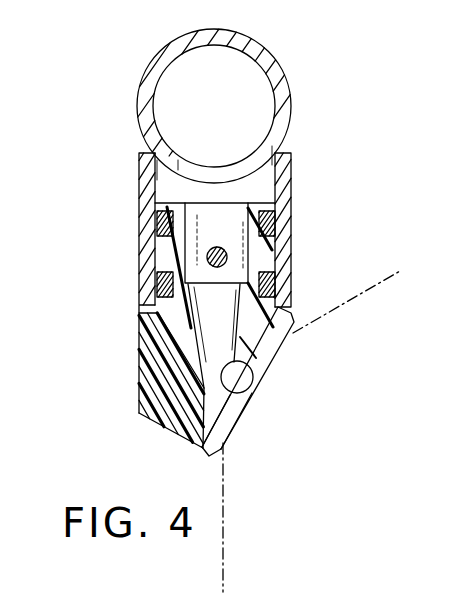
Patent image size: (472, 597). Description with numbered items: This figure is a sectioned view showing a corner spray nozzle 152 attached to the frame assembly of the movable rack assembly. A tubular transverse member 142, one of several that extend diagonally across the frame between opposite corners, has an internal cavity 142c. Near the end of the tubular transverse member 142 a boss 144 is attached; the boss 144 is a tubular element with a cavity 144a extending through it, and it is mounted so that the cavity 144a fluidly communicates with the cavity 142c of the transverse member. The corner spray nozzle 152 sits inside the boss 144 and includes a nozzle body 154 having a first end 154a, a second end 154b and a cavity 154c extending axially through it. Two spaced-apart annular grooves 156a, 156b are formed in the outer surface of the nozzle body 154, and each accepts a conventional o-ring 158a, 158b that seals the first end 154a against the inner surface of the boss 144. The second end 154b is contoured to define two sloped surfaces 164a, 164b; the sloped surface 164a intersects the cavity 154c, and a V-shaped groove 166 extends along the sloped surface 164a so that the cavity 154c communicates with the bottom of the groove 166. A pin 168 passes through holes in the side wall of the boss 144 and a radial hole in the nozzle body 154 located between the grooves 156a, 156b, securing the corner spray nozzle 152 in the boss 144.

The tubular transverse member 142 is at (269, 57).
The cavity 142c is at (252, 99).
The boss 144 is at (292, 180).
The cavity 144a is at (255, 190).
The corner spray nozzle 152 is at (114, 419).
The nozzle body 154 is at (153, 352).
The first end 154a is at (183, 203).
The second end 154b is at (207, 455).
The cavity 154c is at (232, 248).
The annular groove 156a is at (157, 225).
The annular groove 156b is at (157, 283).
The o-ring 158a is at (259, 229).
The o-ring 158b is at (262, 288).
The sloped surface 164a is at (268, 361).
The sloped surface 164b is at (175, 433).
The V-shaped groove 166 is at (240, 406).
The pin 168 is at (221, 268).